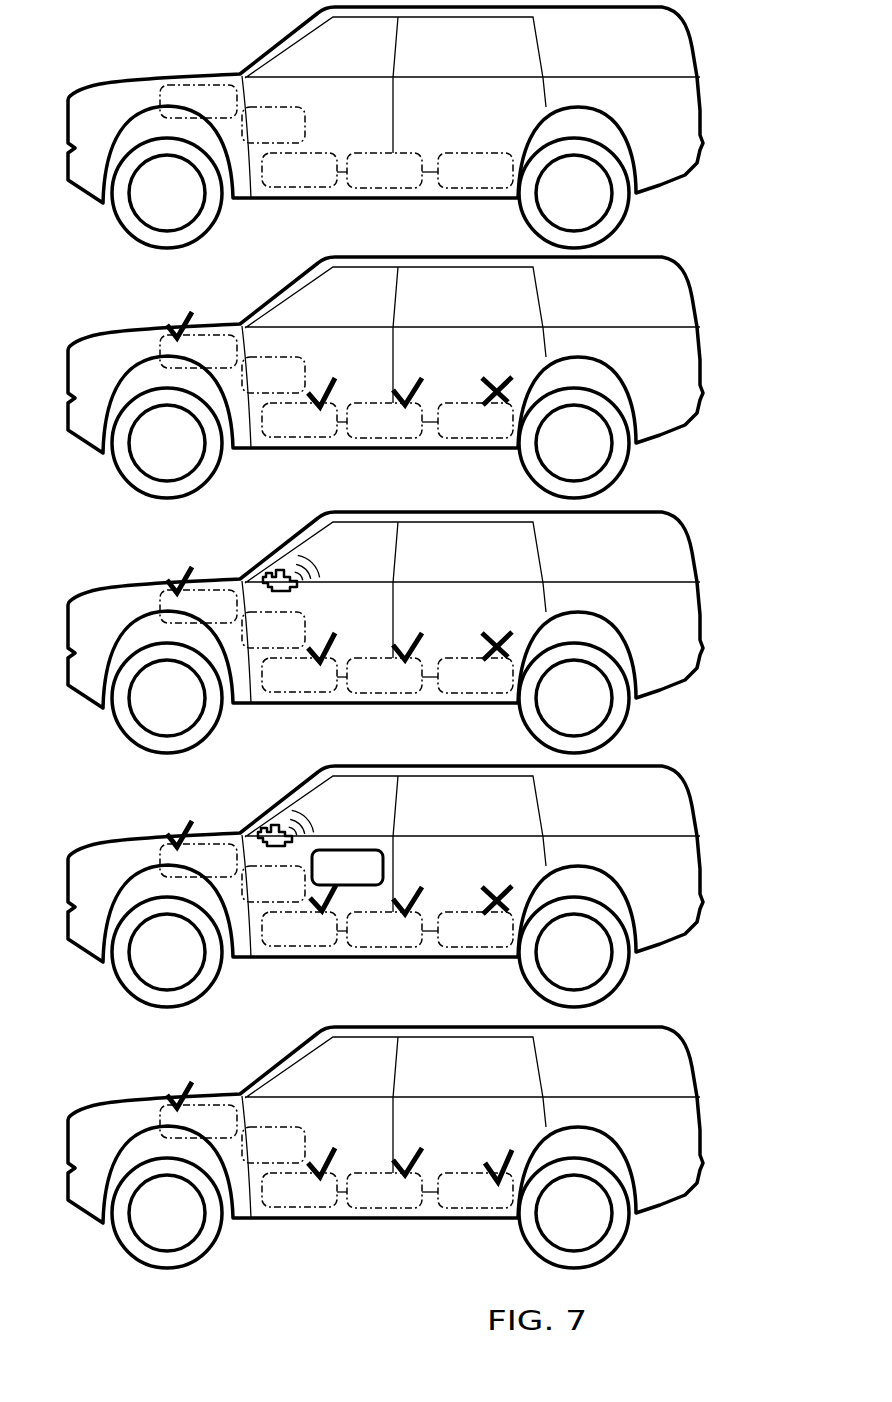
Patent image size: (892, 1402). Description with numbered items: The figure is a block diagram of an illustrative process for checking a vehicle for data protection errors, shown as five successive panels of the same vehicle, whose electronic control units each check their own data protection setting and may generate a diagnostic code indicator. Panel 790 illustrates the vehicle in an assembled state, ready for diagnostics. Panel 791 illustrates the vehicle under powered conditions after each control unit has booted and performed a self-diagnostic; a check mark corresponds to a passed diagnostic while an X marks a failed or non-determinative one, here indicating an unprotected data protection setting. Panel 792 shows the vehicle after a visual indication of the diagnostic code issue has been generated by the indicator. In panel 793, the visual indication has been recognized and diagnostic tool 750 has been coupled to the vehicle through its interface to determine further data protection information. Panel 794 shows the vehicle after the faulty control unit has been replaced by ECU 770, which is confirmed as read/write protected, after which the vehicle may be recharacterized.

The diagnostic tool 750 is at (347, 867).
The ECU 770 is at (475, 1179).
The panel 790 is at (435, 127).
The panel 791 is at (435, 377).
The panel 792 is at (435, 632).
The panel 793 is at (435, 886).
The panel 794 is at (435, 1147).